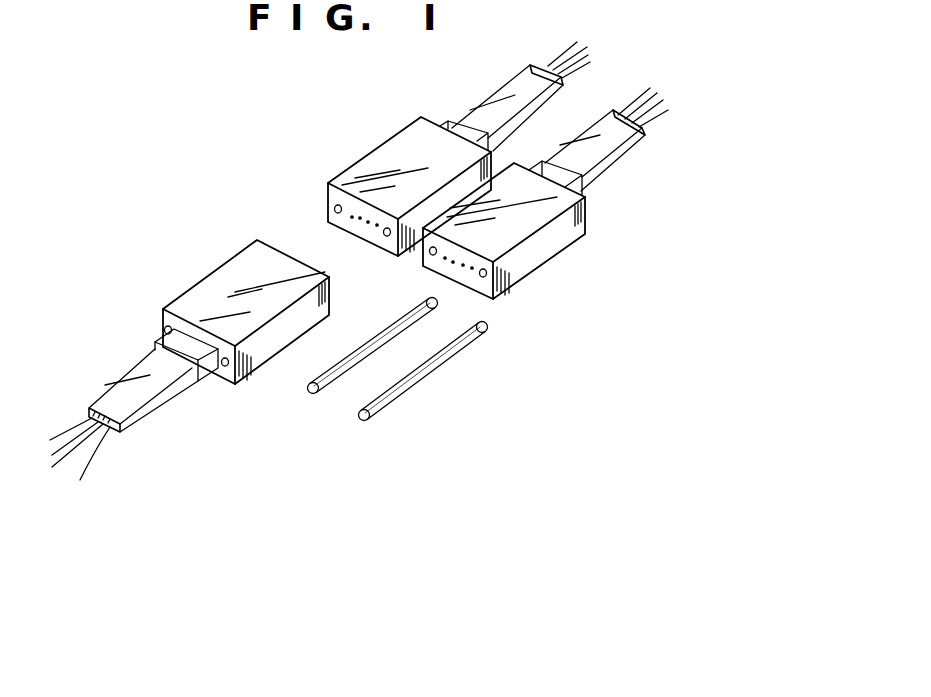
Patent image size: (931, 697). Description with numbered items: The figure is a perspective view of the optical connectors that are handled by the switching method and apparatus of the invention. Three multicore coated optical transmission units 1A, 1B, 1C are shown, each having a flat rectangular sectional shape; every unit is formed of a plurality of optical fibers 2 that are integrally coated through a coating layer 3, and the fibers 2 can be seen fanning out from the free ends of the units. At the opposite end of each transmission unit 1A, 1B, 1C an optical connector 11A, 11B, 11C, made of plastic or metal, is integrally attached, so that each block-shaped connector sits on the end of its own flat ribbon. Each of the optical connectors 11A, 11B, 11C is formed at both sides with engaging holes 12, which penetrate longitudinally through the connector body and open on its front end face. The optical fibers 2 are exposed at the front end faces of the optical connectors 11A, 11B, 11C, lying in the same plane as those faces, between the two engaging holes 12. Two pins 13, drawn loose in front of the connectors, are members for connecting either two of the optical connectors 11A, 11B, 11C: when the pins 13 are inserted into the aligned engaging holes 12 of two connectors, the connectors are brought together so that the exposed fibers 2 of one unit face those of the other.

The multicore coated optical transmission unit 1A is at (156, 414).
The multicore coated optical transmission unit 1B is at (487, 97).
The multicore coated optical transmission unit 1C is at (611, 162).
The optical fibers 2 is at (75, 430).
The coating layer 3 is at (128, 387).
The optical connector 11A is at (204, 279).
The optical connector 11B is at (361, 161).
The optical connector 11C is at (553, 256).
The engaging holes 12 is at (166, 330).
The pins 13 is at (342, 372).